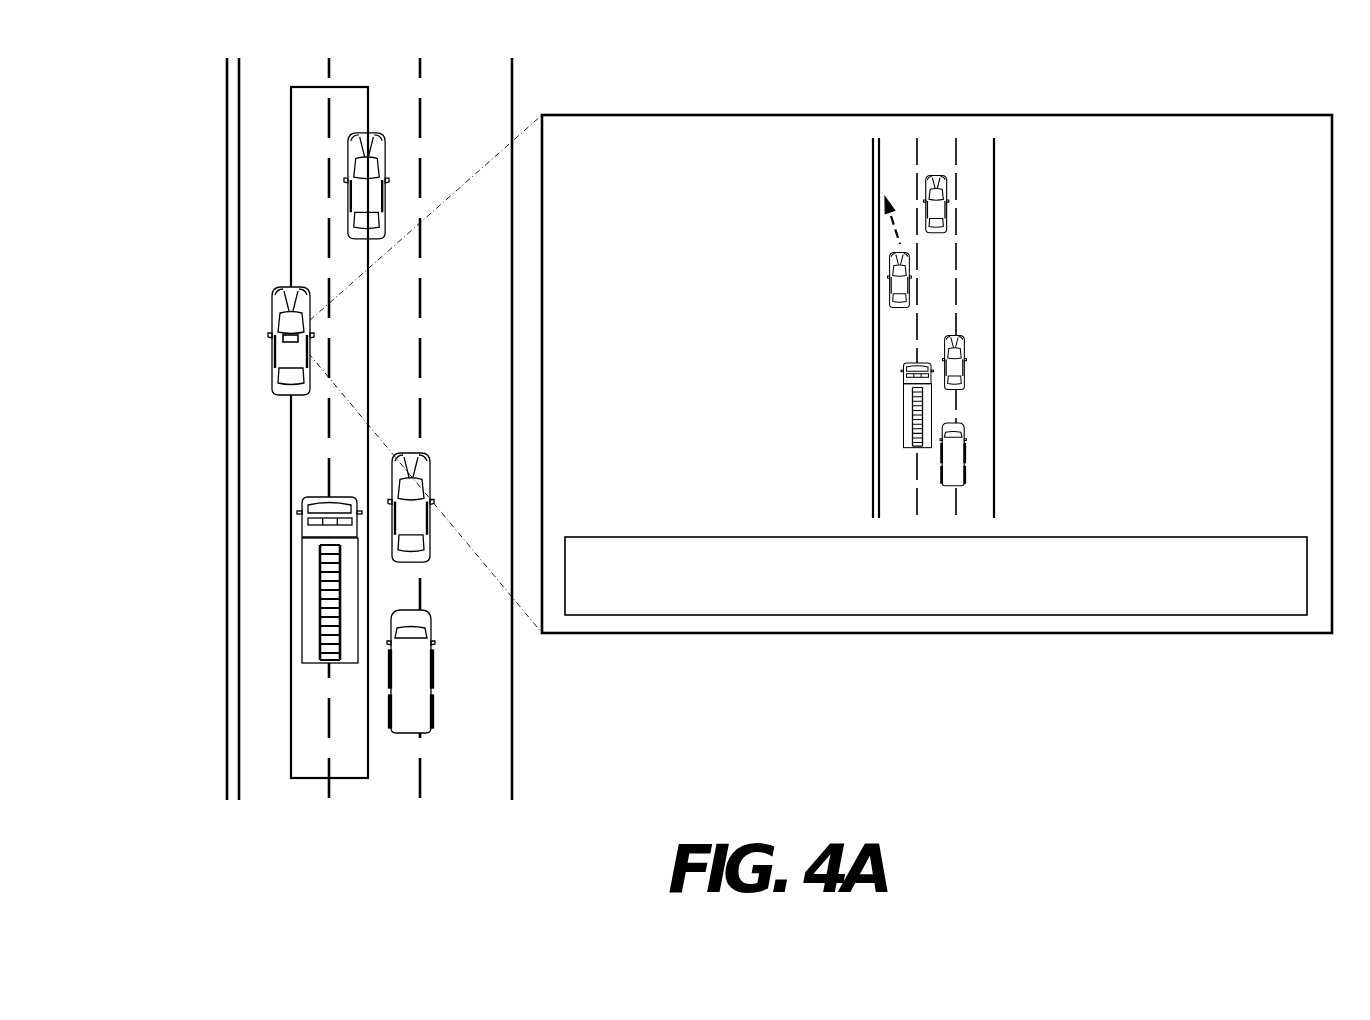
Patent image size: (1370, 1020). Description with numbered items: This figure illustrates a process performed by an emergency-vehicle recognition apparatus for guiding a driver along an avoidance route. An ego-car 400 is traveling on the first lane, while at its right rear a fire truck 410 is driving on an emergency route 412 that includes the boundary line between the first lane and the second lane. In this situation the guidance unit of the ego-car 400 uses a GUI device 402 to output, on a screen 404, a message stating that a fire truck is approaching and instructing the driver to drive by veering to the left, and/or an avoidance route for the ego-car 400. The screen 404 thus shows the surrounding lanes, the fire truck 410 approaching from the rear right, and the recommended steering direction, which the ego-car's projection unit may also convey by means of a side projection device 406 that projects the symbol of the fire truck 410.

The ego-car 400 is at (275, 303).
The GUI device 402 is at (284, 337).
The screen 404 is at (937, 340).
The side projection device 406 is at (892, 222).
The fire truck 410 is at (300, 614).
The emergency route 412 is at (290, 730).